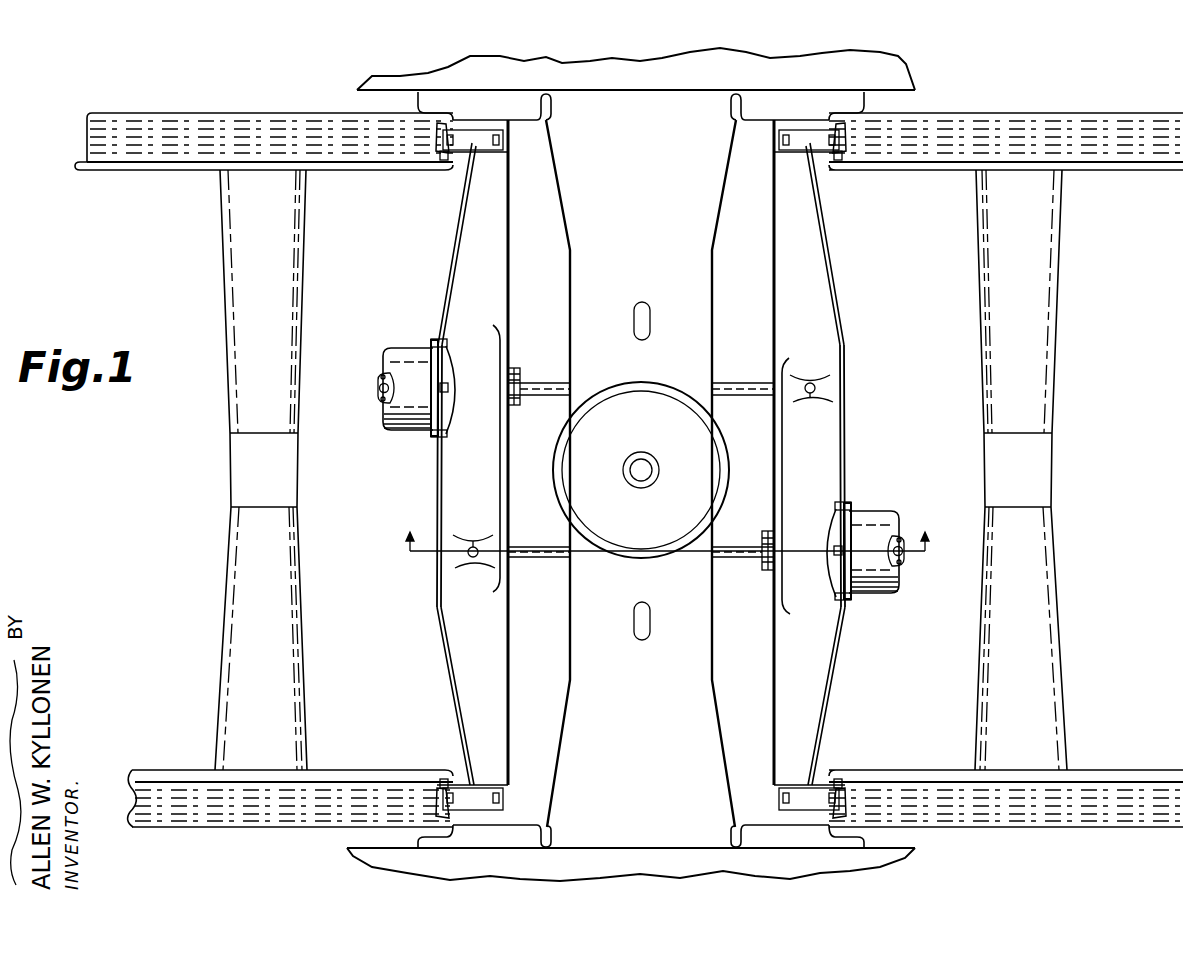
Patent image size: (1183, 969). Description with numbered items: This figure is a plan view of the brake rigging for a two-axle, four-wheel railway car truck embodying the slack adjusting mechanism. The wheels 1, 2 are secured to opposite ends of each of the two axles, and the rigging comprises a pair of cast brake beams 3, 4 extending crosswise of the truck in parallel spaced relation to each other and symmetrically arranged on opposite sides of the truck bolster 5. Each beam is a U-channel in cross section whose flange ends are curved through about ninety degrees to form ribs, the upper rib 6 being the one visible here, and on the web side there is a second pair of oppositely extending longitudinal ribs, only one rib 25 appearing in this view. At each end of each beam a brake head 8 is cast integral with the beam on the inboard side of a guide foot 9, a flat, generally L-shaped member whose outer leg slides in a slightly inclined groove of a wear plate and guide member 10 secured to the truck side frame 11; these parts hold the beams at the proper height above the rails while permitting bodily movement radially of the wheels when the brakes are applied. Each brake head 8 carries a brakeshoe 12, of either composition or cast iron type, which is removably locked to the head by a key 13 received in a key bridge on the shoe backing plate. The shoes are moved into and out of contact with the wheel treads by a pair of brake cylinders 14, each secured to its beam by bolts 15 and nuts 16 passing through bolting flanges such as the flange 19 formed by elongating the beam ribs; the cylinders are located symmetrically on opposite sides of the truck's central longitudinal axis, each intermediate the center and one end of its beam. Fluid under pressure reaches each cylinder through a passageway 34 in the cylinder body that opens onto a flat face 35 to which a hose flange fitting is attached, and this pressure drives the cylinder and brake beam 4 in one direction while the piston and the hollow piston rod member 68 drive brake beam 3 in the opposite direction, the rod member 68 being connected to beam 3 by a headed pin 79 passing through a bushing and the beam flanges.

The wheel 1 is at (98, 146).
The wheel 2 is at (131, 800).
The brake beam 3 is at (467, 252).
The brake beam 4 is at (815, 250).
The truck bolster 5 is at (592, 236).
The upper rib 6 is at (441, 480).
The brake head 8 is at (482, 142).
The guide foot 9 is at (510, 122).
The wear plate and guide member 10 is at (507, 102).
The truck side frame 11 is at (635, 78).
The brakeshoe 12 is at (436, 140).
The key 13 is at (442, 161).
The brake cylinder 14 is at (400, 408).
The bolt 15 is at (433, 345).
The nut 16 is at (449, 387).
The bolting flange 19 is at (436, 340).
The longitudinal rib 25 is at (504, 528).
The passageway 34 is at (378, 386).
The flat face 35 is at (379, 392).
The hollow piston rod member 68 is at (538, 557).
The headed pin 79 is at (643, 471).